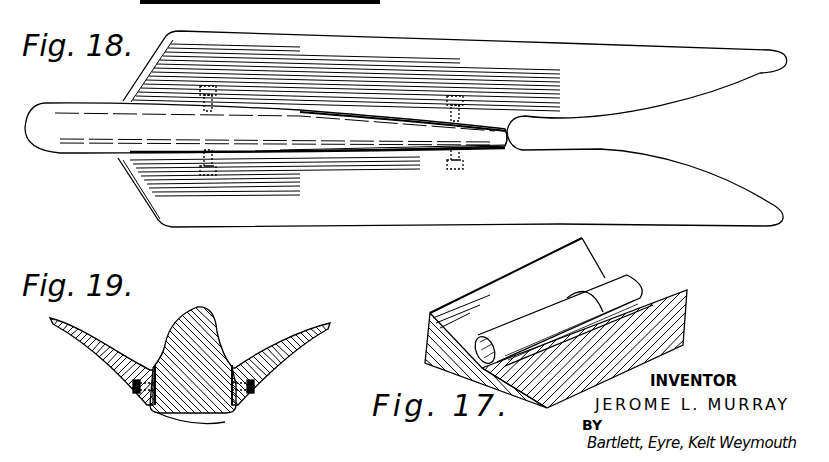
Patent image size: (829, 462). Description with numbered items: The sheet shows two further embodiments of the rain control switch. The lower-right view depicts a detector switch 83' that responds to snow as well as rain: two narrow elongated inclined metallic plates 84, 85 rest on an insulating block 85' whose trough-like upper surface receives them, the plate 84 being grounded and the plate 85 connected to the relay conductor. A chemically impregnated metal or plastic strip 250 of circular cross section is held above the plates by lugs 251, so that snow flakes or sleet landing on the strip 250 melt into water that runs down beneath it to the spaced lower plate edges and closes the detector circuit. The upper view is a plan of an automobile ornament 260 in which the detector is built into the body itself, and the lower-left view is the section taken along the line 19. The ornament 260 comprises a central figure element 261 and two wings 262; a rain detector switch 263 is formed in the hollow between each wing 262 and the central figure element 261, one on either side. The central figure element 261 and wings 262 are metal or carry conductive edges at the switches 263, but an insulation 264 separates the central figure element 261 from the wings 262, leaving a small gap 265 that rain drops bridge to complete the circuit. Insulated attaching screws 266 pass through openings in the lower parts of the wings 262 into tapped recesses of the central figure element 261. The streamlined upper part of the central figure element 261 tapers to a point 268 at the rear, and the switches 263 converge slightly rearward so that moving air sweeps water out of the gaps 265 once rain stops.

In FIG. 18, the section line 19 is at (201, 245).
In FIG. 18, the automobile ornament 260 is at (406, 134).
In FIG. 19, the automobile ornament 260 is at (190, 367).
In FIG. 18, the figure 261 is at (33, 112).
In FIG. 19, the figure 261 is at (197, 308).
In FIG. 18, the wings 262 is at (408, 41).
In FIG. 19, the wings 262 is at (83, 342).
In FIG. 19, the rain detector switch 263 is at (147, 361).
In FIG. 19, the insulation 264 is at (222, 423).
In FIG. 18, the gap 265 is at (500, 117).
In FIG. 19, the gap 265 is at (154, 366).
In FIG. 18, the insulated attaching screws 266 is at (455, 172).
In FIG. 19, the insulated attaching screws 266 is at (132, 388).
In FIG. 18, the point 268 is at (507, 136).
In FIG. 17, the detector switch 83' is at (455, 293).
In FIG. 17, the plate 84 is at (650, 297).
In FIG. 17, the plate 85 is at (579, 302).
In FIG. 17, the insulating block 85' is at (525, 403).
In FIG. 17, the strip 250 is at (620, 277).
In FIG. 17, the lugs 251 is at (567, 298).